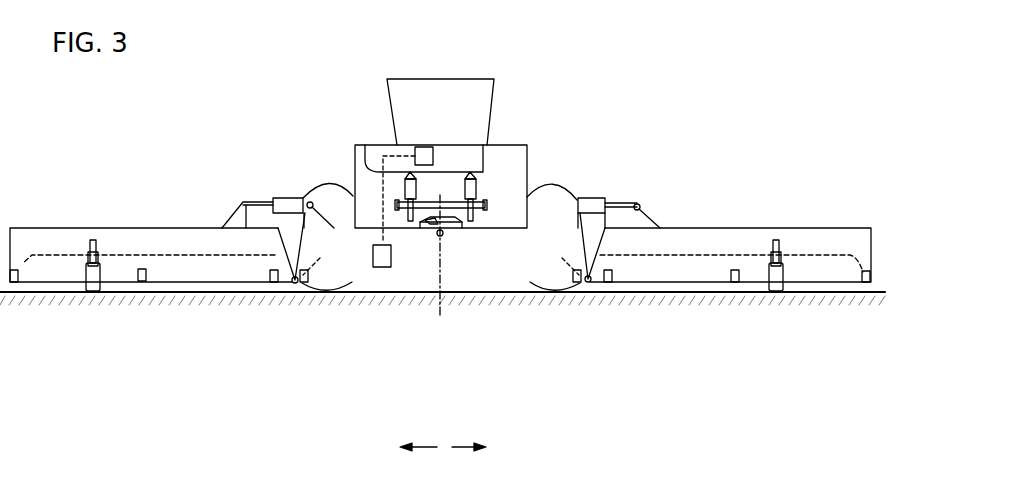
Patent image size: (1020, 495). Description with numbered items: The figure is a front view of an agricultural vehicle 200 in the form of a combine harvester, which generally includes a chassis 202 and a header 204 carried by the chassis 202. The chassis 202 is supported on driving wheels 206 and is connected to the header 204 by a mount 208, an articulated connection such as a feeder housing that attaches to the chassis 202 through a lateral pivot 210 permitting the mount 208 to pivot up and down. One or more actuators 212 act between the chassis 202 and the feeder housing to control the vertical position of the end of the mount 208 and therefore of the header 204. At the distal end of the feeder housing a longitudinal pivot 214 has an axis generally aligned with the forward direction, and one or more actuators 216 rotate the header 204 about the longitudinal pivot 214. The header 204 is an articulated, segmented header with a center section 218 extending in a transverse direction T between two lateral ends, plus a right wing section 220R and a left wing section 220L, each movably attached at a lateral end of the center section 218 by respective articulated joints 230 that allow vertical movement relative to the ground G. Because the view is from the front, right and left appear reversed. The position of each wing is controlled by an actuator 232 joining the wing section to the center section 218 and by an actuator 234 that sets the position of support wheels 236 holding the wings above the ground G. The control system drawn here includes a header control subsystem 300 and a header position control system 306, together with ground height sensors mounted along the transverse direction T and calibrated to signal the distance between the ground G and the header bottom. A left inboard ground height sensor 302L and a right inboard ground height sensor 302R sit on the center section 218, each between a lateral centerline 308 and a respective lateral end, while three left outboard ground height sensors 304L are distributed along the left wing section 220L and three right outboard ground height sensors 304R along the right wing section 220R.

The agricultural vehicle 200 is at (443, 210).
The chassis 202 is at (490, 145).
The header 204 is at (780, 216).
The driving wheels 206 is at (330, 184).
The mount 208 is at (486, 206).
The lateral pivot 210 is at (393, 202).
The actuators 212 is at (406, 186).
The longitudinal pivot 214 is at (441, 236).
The actuators 216 is at (434, 226).
The center section 218 is at (523, 263).
The right wing section 220R is at (153, 236).
The left wing section 220L is at (745, 240).
The articulated joints 230 is at (294, 284).
The actuators 232 is at (284, 199).
The actuator 234 is at (97, 259).
The support wheels 236 is at (88, 280).
The header control subsystem 300 is at (384, 268).
The right inboard ground height sensor 302R is at (304, 285).
The left inboard ground height sensor 302L is at (577, 285).
The right outboard ground height sensors 304R is at (272, 284).
The left outboard ground height sensors 304L is at (608, 284).
The header position control system 306 is at (424, 147).
The lateral centerline 308 is at (440, 318).
The ground G is at (880, 300).
The transverse direction T is at (443, 447).